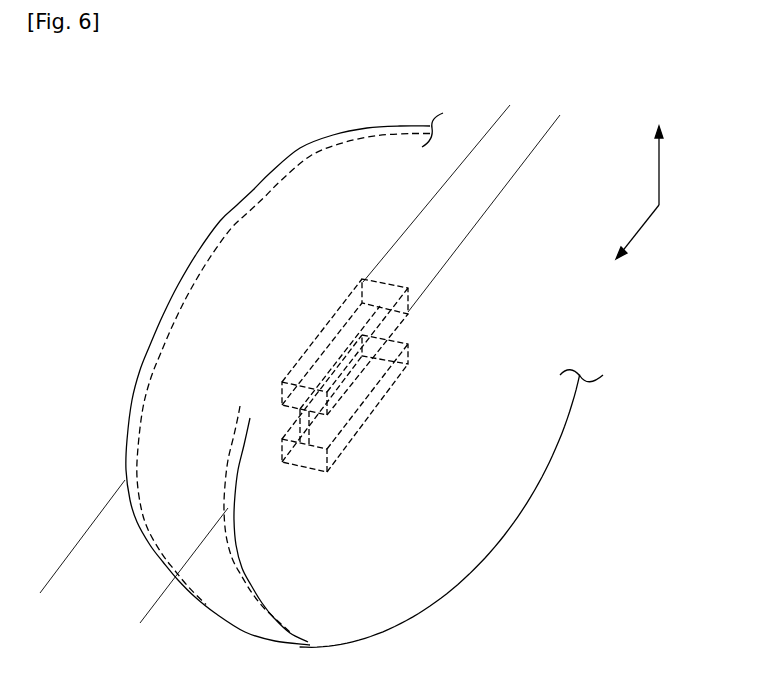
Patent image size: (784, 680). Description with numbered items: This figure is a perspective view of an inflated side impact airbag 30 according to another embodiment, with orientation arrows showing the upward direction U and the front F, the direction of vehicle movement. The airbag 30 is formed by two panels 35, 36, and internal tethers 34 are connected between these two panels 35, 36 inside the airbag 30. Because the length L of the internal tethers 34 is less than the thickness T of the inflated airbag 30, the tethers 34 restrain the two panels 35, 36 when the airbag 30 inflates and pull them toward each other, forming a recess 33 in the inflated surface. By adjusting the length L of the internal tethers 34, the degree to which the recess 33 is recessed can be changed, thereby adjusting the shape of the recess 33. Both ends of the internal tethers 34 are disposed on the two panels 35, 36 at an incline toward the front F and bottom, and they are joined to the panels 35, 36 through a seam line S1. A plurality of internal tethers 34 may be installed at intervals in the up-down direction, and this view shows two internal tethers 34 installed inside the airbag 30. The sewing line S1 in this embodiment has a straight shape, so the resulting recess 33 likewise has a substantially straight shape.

The airbag 30 is at (317, 178).
The recess 33 is at (388, 372).
The internal tethers 34 is at (300, 407).
The panel 35 is at (483, 513).
The panel 36 is at (248, 373).
The seam line S1 is at (363, 372).
The length L is at (510, 118).
The thickness T is at (147, 607).
The upward direction U is at (660, 148).
The front F is at (626, 246).